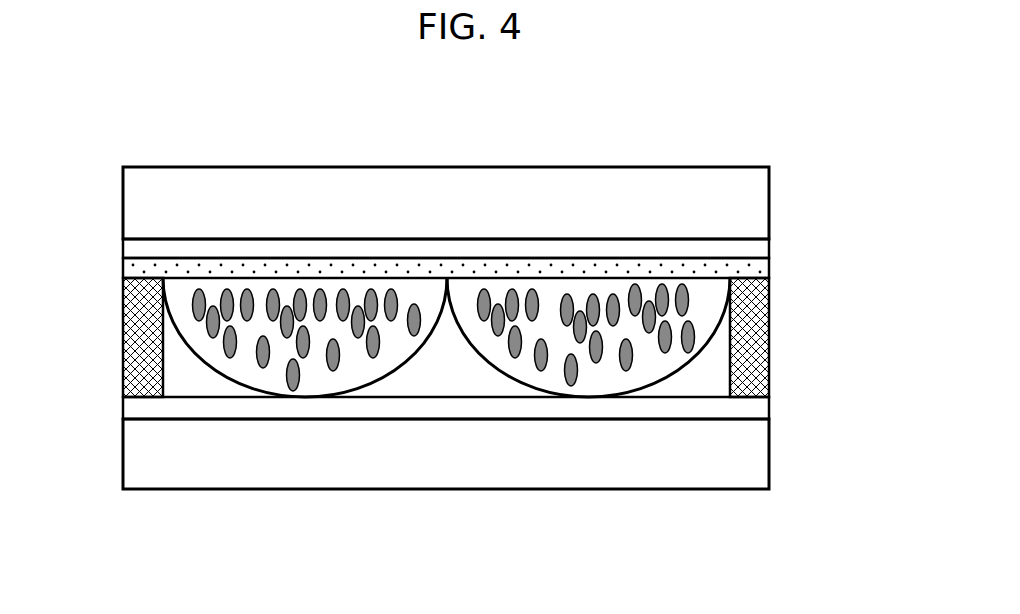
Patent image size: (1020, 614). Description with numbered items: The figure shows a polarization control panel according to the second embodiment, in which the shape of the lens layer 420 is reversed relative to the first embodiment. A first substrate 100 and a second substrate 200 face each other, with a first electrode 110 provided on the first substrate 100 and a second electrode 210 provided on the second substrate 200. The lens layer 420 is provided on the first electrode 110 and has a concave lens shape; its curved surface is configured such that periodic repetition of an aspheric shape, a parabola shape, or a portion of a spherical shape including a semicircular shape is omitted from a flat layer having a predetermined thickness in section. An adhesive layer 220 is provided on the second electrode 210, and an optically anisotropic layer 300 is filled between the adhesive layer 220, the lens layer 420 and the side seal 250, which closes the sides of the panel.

The first substrate 100 is at (748, 463).
The first electrode 110 is at (748, 408).
The second substrate 200 is at (758, 217).
The second electrode 210 is at (738, 249).
The adhesive layer 220 is at (768, 285).
The side seal 250 is at (143, 335).
The optically anisotropic layer 300 is at (559, 293).
The lens layer 420 is at (457, 367).